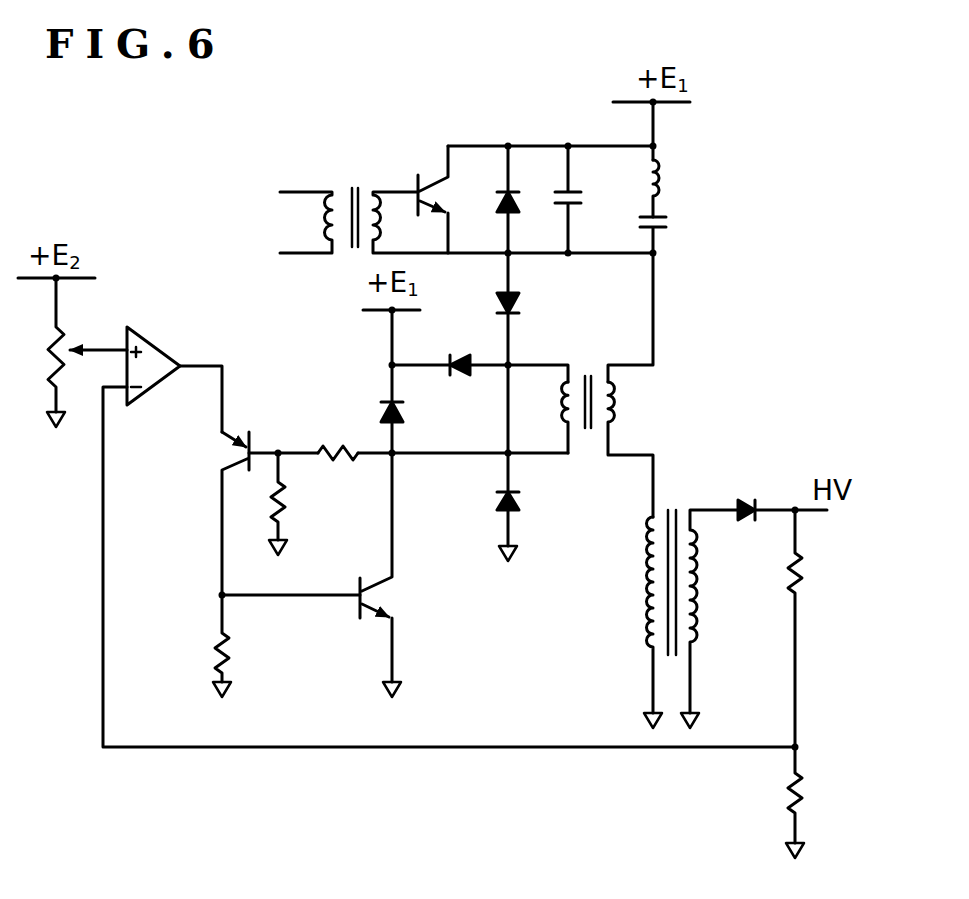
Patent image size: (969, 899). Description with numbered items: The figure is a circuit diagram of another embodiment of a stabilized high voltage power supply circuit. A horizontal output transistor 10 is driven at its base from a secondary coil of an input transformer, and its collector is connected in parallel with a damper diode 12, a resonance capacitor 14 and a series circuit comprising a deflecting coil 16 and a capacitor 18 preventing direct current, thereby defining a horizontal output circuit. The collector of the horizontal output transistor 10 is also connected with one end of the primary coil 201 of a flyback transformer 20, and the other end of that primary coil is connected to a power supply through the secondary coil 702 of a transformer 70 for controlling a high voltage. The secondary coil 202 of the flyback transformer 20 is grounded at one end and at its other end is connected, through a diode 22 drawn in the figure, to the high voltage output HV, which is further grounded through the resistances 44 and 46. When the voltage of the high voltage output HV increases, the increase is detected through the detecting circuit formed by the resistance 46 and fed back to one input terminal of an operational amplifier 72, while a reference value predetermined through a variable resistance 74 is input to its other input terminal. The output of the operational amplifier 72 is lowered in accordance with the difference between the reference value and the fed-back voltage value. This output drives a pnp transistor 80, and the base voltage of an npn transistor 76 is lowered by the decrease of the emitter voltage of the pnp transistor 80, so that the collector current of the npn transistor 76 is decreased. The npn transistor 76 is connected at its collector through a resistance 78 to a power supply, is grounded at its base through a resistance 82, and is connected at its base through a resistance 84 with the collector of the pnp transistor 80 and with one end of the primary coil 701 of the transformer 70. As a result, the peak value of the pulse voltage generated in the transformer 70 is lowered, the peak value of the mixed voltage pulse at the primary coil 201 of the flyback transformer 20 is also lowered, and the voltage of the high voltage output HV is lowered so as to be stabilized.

The horizontal output transistor 10 is at (440, 196).
The damper diode 12 is at (523, 197).
The resonance capacitor 14 is at (583, 197).
The deflecting coil 16 is at (673, 170).
The capacitor preventing direct current 18 is at (671, 224).
The flyback transformer 20 is at (653, 586).
The primary coil of the flyback transformer 201 is at (637, 588).
The secondary coil of the flyback transformer 202 is at (700, 593).
The rectifier diode 22 is at (750, 498).
The resistance 44 is at (815, 584).
The resistance 46 is at (772, 798).
The transformer for controlling a high voltage 70 is at (591, 403).
The primary coil of the transformer for controlling a high voltage 701 is at (565, 408).
The secondary coil of the transformer for controlling a high voltage 702 is at (618, 403).
The operational amplifier 72 is at (170, 350).
The variable resistance 74 is at (30, 355).
The npn transistor 76 is at (400, 598).
The resistance 78 is at (204, 657).
The pnp transistor 80 is at (227, 453).
The resistance 82 is at (296, 493).
The resistance 84 is at (334, 442).